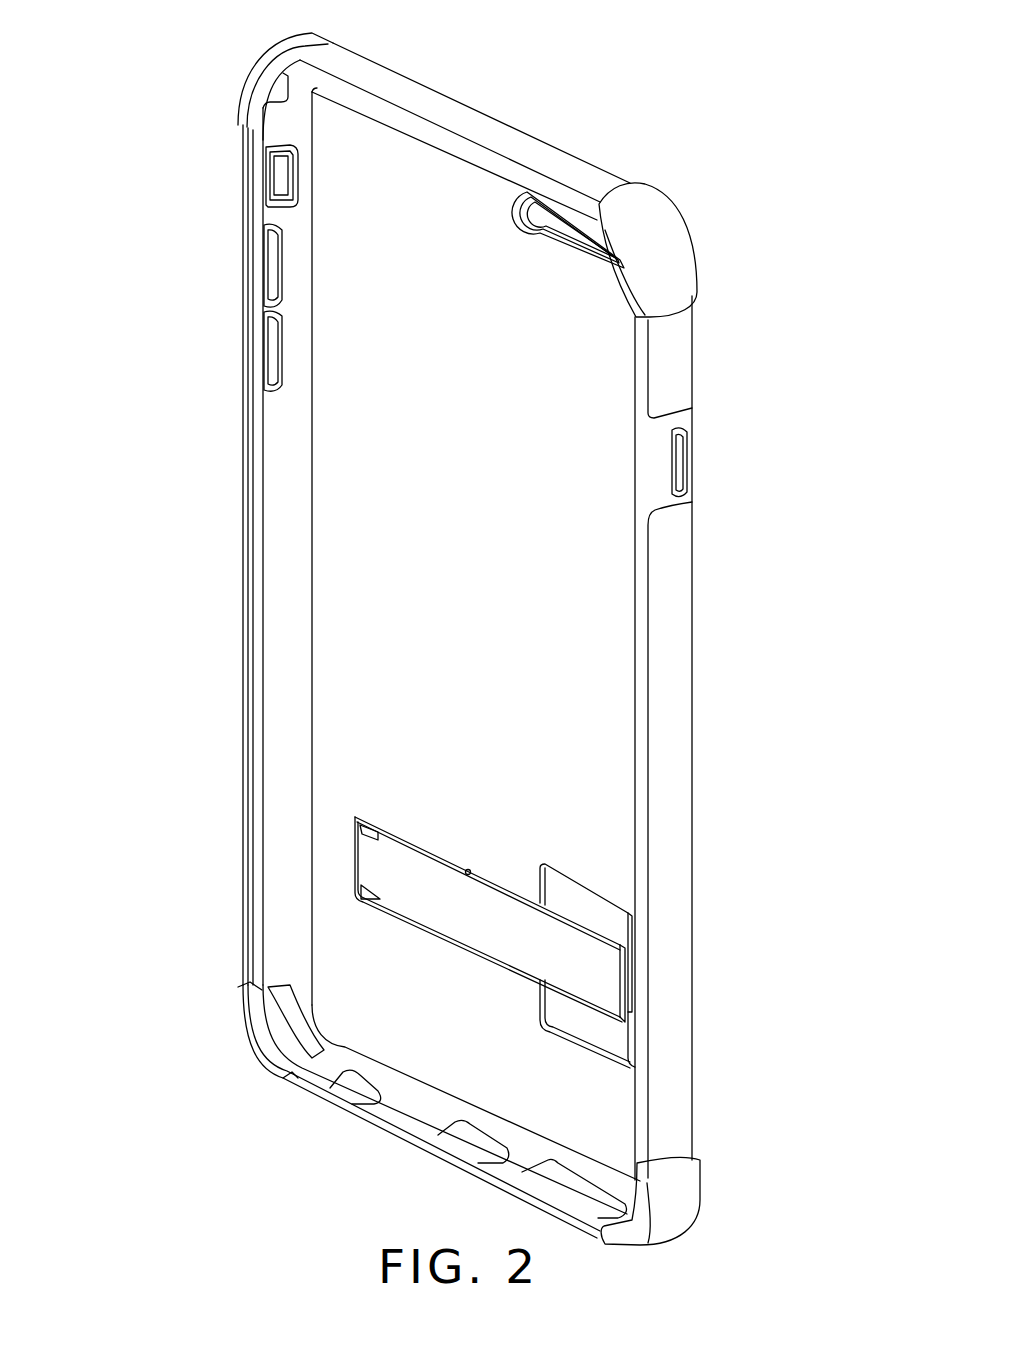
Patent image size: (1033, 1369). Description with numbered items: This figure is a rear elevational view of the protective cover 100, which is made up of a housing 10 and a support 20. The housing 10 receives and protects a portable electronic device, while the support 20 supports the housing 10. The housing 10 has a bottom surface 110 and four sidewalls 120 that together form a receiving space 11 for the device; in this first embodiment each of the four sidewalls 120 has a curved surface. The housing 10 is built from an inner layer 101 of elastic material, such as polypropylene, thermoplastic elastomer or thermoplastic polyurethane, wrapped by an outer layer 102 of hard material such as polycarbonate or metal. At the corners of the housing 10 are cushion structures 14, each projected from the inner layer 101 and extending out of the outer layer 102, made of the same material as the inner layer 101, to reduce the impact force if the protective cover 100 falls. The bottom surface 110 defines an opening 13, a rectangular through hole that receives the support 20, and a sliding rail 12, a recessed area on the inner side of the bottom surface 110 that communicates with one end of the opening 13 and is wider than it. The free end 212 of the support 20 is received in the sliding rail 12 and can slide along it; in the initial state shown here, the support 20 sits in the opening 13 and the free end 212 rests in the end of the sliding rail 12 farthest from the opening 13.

The protective cover 100 is at (190, 46).
The housing 10 is at (488, 104).
The receiving space 11 is at (557, 385).
The bottom surface 110 is at (345, 470).
The sidewalls 120 is at (278, 548).
The inner layer 101 is at (647, 485).
The outer layer 102 is at (670, 590).
The opening 13 is at (360, 820).
The sliding rail 12 is at (580, 901).
The free end 212 is at (632, 937).
The support 20 is at (605, 965).
The cushion structure 14 is at (680, 1205).